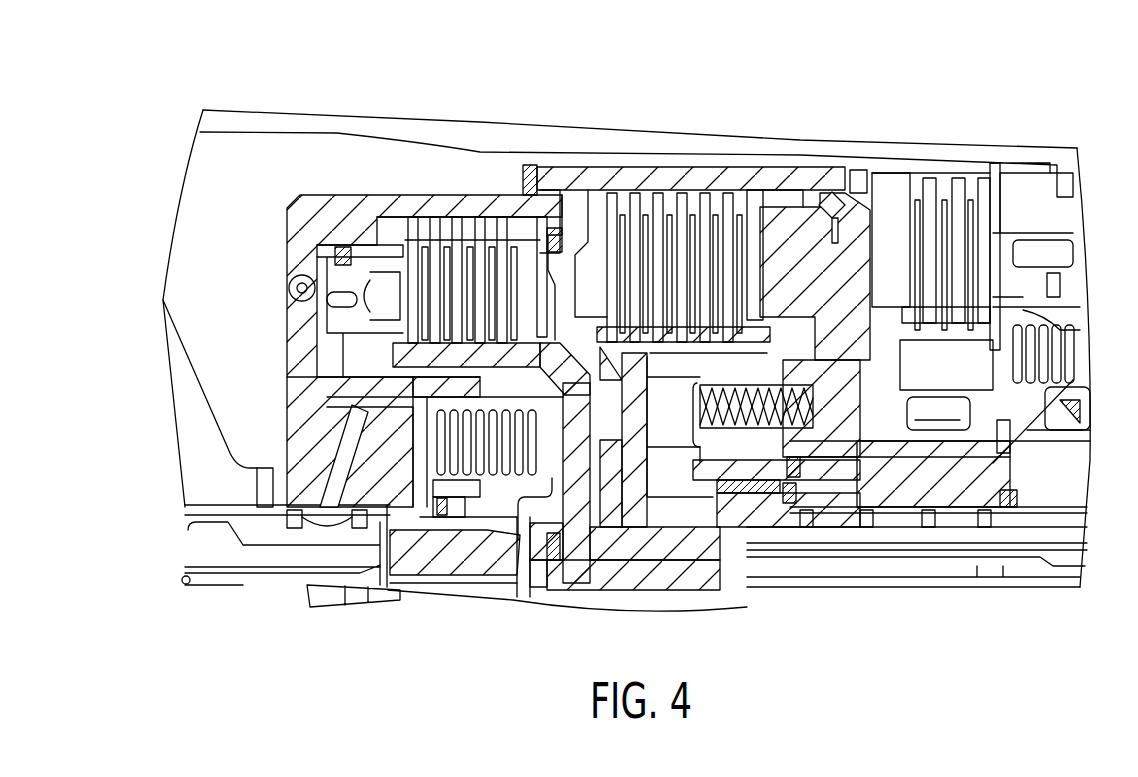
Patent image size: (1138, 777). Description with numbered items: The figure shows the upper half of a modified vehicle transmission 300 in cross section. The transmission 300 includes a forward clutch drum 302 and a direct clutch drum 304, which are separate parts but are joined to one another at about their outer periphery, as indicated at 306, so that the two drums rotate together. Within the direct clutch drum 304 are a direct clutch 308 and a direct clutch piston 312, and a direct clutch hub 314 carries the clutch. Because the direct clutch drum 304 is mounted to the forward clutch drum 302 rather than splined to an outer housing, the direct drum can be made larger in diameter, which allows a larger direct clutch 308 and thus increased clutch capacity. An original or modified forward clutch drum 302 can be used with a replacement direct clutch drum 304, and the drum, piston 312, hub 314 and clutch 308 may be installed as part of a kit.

The transmission 300 is at (1048, 120).
The forward clutch drum 302 is at (430, 197).
The direct clutch drum 304 is at (684, 272).
The joint at outer periphery of the drums 306 is at (568, 145).
The direct clutch 308 is at (735, 223).
The direct clutch piston 312 is at (815, 272).
The direct clutch hub 314 is at (697, 508).